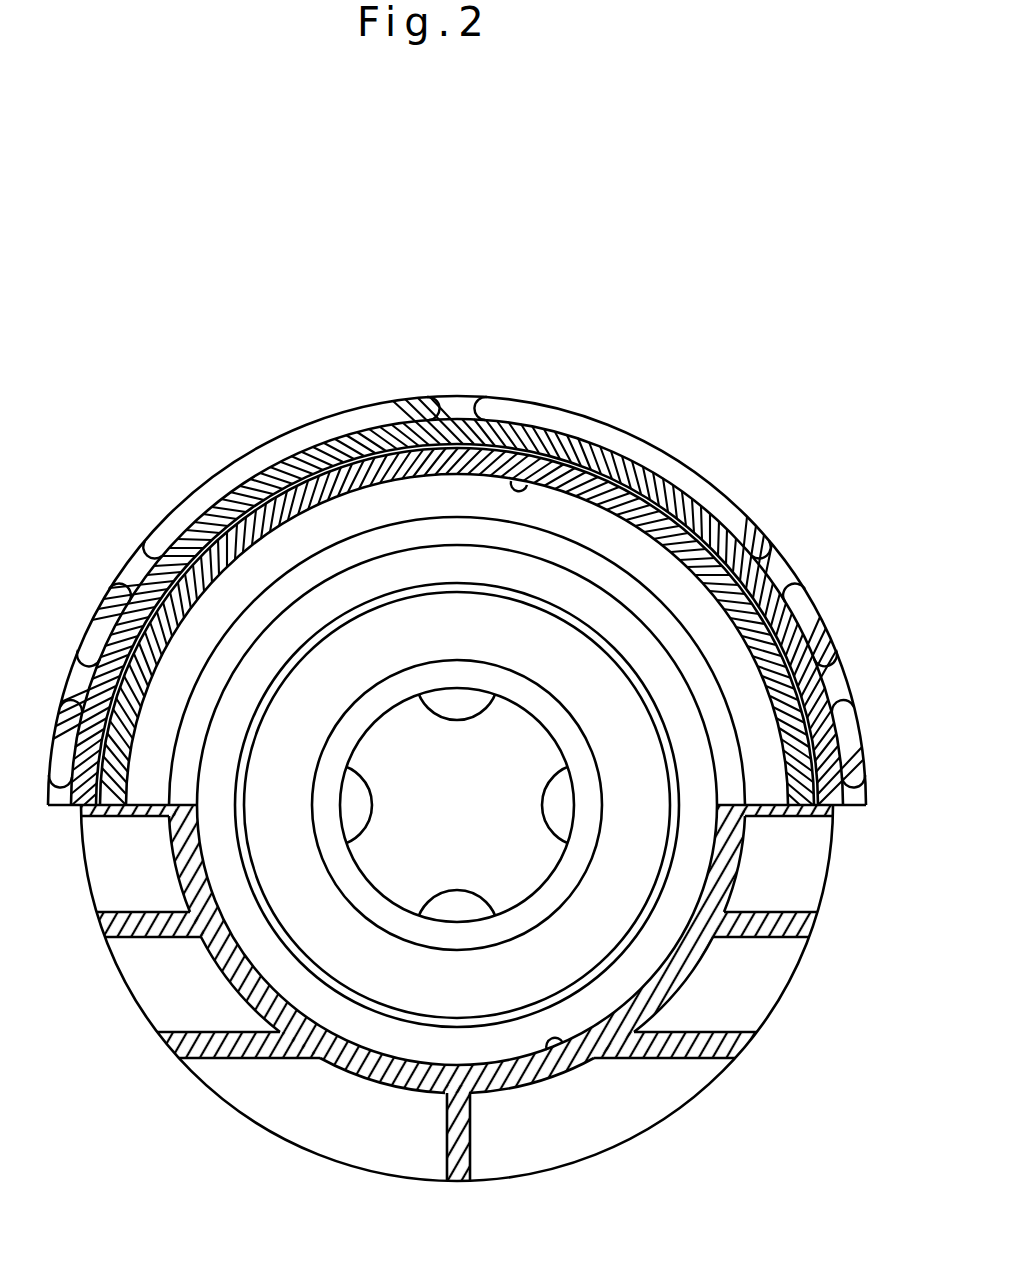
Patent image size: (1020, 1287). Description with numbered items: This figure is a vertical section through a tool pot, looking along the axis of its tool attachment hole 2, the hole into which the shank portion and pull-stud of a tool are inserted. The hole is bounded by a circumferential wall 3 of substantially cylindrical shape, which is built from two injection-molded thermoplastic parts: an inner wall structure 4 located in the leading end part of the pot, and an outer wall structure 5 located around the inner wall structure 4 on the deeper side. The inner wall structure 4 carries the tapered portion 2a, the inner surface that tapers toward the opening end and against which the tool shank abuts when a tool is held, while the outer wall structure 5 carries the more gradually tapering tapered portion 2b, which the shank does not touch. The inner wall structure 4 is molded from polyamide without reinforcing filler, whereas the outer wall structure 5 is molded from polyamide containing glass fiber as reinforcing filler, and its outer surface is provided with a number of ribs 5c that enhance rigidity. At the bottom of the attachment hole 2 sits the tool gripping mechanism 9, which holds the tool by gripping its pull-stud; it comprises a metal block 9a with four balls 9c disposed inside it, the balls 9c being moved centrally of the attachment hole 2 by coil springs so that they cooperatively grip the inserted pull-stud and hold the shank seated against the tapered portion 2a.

The tool attachment hole 2 is at (576, 516).
The tapered portion 2a is at (530, 478).
The tapered portion 2b is at (554, 1052).
The circumferential wall 3 is at (315, 308).
The inner wall structure 4 is at (340, 468).
The outer wall structure 5 is at (393, 440).
The ribs 5c is at (478, 405).
The tool gripping mechanism 9 is at (597, 690).
The metal block 9a is at (457, 805).
The balls 9c is at (455, 710).